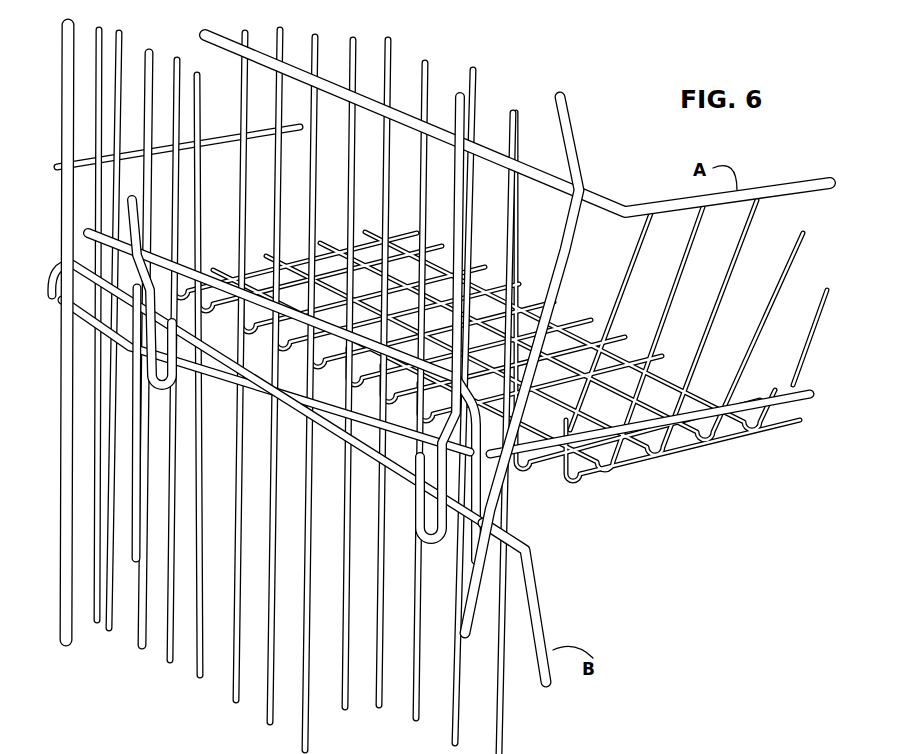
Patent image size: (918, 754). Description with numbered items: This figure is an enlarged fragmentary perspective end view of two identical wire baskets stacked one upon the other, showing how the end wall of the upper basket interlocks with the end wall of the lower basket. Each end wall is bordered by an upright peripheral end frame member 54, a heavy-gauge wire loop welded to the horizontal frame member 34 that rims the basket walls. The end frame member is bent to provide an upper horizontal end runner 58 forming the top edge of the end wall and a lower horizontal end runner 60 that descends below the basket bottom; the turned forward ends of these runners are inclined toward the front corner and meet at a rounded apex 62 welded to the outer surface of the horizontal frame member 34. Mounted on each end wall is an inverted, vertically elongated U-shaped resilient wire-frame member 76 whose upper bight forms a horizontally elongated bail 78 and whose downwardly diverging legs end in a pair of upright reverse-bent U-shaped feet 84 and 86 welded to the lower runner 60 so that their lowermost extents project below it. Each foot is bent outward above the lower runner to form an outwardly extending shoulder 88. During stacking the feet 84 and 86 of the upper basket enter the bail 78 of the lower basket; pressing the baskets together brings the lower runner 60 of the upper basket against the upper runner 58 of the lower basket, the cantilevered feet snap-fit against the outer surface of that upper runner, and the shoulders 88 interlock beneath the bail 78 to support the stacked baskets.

The horizontal frame member 34 is at (223, 668).
The peripheral end frame member 54 is at (56, 633).
The upper horizontal end runner 58 is at (498, 522).
The lower horizontal end runner 60 is at (354, 424).
The rounded apex 62 is at (583, 232).
The inverted U-shaped resilient wire-frame member 76 is at (127, 447).
The bail 78 is at (282, 396).
The reverse-bent U-shaped foot 84 is at (178, 384).
The reverse-bent U-shaped foot 86 is at (428, 557).
The outwardly-extending shoulder 88 is at (64, 270).